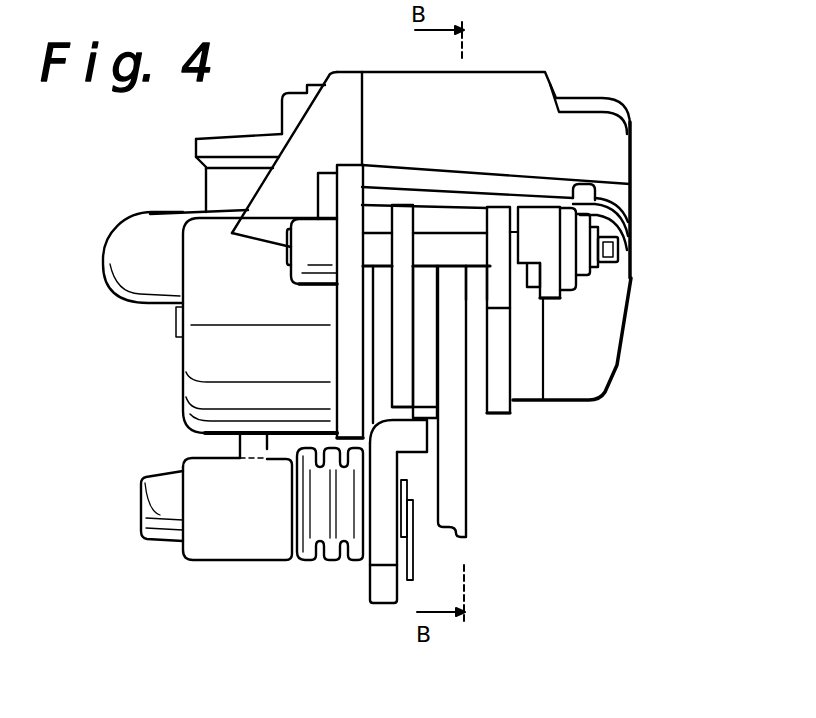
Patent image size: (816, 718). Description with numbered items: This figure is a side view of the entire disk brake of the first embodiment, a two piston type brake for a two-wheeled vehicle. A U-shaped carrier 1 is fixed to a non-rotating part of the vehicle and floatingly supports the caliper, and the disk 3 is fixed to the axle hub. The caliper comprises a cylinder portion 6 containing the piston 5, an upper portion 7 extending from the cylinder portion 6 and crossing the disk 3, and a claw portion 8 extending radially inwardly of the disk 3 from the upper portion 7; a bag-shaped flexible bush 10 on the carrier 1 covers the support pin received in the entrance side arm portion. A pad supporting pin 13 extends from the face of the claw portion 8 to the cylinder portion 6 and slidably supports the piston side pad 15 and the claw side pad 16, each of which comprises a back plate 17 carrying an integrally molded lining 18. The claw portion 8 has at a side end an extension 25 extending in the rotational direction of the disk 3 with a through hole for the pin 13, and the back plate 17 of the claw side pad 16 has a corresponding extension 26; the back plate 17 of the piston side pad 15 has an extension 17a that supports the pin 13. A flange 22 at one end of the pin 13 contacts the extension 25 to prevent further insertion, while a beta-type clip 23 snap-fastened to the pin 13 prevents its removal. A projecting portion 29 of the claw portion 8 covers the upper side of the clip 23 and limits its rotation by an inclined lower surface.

The carrier 1 is at (380, 583).
The disk 3 is at (455, 513).
The piston 5 is at (320, 412).
The cylinder portion 6 is at (207, 340).
The upper portion 7 is at (541, 90).
The claw portion 8 is at (613, 282).
The flexible bush 10 is at (162, 503).
The pad supporting pin 13 is at (488, 208).
The piston side pad 15 is at (388, 346).
The claw side pad 16 is at (514, 335).
The back plate 17 is at (425, 362).
The extension 17a is at (398, 282).
The lining 18 is at (473, 352).
The flange 22 is at (578, 228).
The clip 23 is at (531, 288).
The extension 25 is at (543, 230).
The extension 26 is at (428, 245).
The projecting portion 29 is at (535, 218).